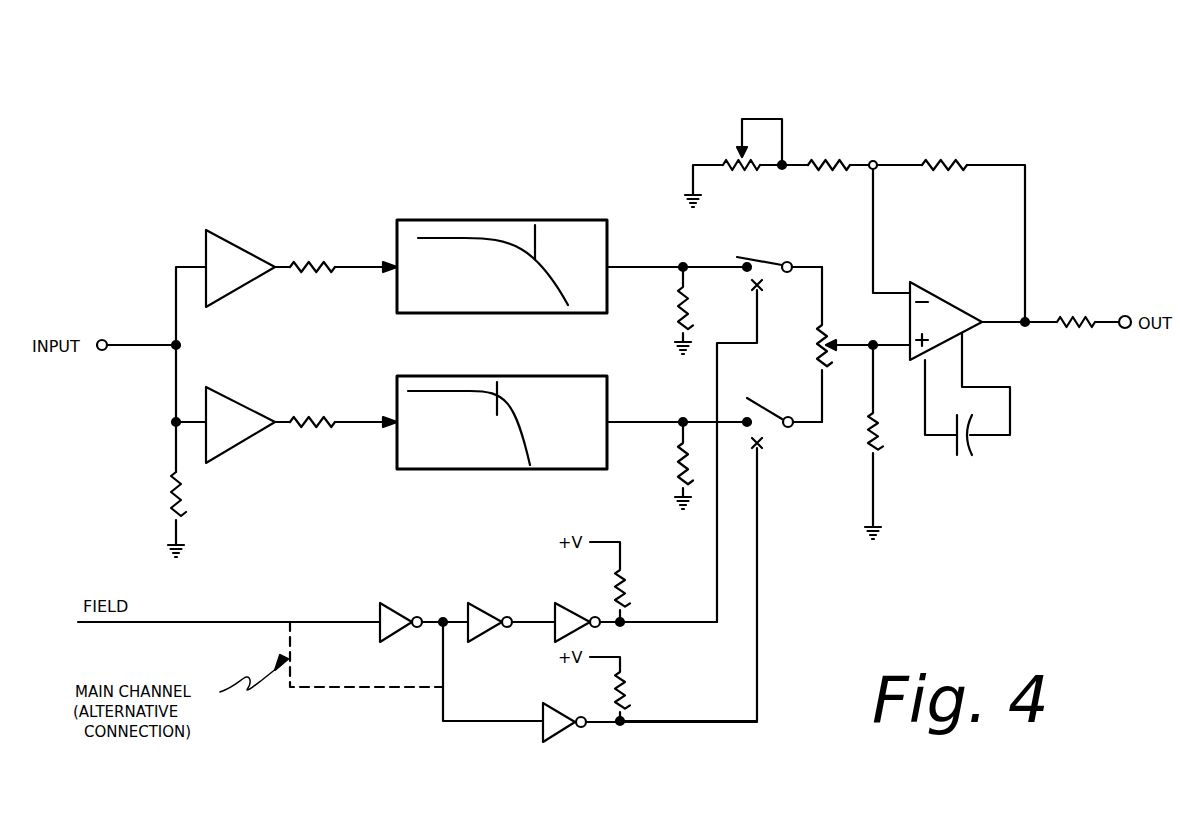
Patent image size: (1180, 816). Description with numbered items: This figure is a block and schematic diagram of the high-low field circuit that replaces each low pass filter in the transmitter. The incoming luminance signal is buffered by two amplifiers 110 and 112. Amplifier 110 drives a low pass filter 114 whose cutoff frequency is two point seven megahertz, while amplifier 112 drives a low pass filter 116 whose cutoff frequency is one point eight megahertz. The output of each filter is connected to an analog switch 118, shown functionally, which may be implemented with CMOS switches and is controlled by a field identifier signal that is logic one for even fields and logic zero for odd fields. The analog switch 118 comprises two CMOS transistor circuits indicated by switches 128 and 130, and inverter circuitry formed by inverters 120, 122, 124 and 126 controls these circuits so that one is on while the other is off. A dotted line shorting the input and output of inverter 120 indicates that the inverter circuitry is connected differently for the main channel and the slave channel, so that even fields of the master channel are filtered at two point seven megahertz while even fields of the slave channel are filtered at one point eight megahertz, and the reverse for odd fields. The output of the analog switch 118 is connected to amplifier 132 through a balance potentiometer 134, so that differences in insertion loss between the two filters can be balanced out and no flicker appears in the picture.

The amplifier 110 is at (245, 252).
The amplifier 112 is at (237, 408).
The low pass filter 114 is at (397, 232).
The low pass filter 116 is at (397, 390).
The analog switch 118 is at (776, 222).
The inverter 120 is at (395, 611).
The inverter 122 is at (477, 611).
The inverter 124 is at (562, 611).
The inverter 126 is at (560, 732).
The switch 128 is at (774, 260).
The switch 130 is at (770, 409).
The amplifier 132 is at (947, 303).
The balance potentiometer 134 is at (826, 339).